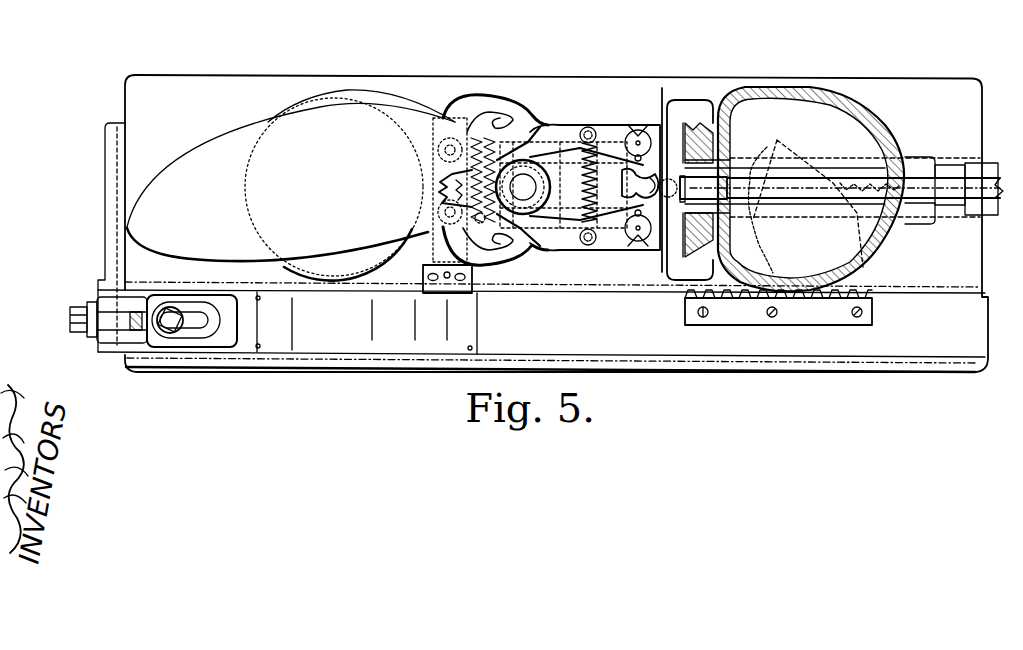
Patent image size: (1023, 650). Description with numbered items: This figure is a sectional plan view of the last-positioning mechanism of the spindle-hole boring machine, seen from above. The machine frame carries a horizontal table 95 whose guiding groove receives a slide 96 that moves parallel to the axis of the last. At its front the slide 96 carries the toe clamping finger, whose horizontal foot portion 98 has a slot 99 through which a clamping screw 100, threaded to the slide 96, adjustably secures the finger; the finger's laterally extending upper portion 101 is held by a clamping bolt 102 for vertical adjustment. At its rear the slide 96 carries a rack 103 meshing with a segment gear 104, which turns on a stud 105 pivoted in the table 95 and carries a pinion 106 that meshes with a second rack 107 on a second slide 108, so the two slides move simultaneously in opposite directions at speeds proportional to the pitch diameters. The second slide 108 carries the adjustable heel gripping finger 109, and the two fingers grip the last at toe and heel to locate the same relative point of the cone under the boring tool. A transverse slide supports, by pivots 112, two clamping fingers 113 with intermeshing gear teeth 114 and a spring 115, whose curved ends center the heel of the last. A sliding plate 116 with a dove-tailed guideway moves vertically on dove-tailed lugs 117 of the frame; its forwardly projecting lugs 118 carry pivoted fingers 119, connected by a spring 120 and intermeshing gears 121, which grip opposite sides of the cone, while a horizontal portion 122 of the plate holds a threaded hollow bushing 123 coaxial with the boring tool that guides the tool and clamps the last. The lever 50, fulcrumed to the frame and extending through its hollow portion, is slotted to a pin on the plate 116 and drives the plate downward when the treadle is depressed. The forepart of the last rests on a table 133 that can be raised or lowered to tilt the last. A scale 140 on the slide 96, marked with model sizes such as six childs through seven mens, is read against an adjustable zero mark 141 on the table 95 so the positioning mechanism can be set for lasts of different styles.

The lever 50 is at (963, 200).
The table 95 is at (400, 371).
The slide 96 is at (658, 357).
The horizontal foot portion 98 is at (228, 338).
The slot 99 is at (193, 328).
The clamping screw 100 is at (167, 330).
The laterally extending upper portion 101 is at (122, 207).
The clamping bolt 102 is at (70, 311).
The rack 103 is at (818, 318).
The segment gear 104 is at (873, 297).
The stud 105 is at (903, 250).
The pinion 106 is at (877, 260).
The rack 107 is at (870, 195).
The second slide 108 is at (665, 265).
The heel gripping finger 109 is at (692, 103).
The pivots 112 is at (450, 141).
The clamping fingers 113 is at (482, 98).
The intermeshing gear teeth 114 is at (440, 167).
The spring 115 is at (440, 188).
The sliding plate 116 is at (703, 120).
The dove-tailed lugs 117 is at (718, 132).
The lugs 118 is at (662, 117).
The fingers 119 is at (580, 127).
The spring 120 is at (622, 140).
The intermeshing gears 121 is at (623, 250).
The horizontal portion 122 is at (568, 177).
The hollow bushing 123 is at (523, 160).
The table 133 is at (312, 102).
The scale 140 is at (337, 327).
The adjustable zero mark 141 is at (450, 283).